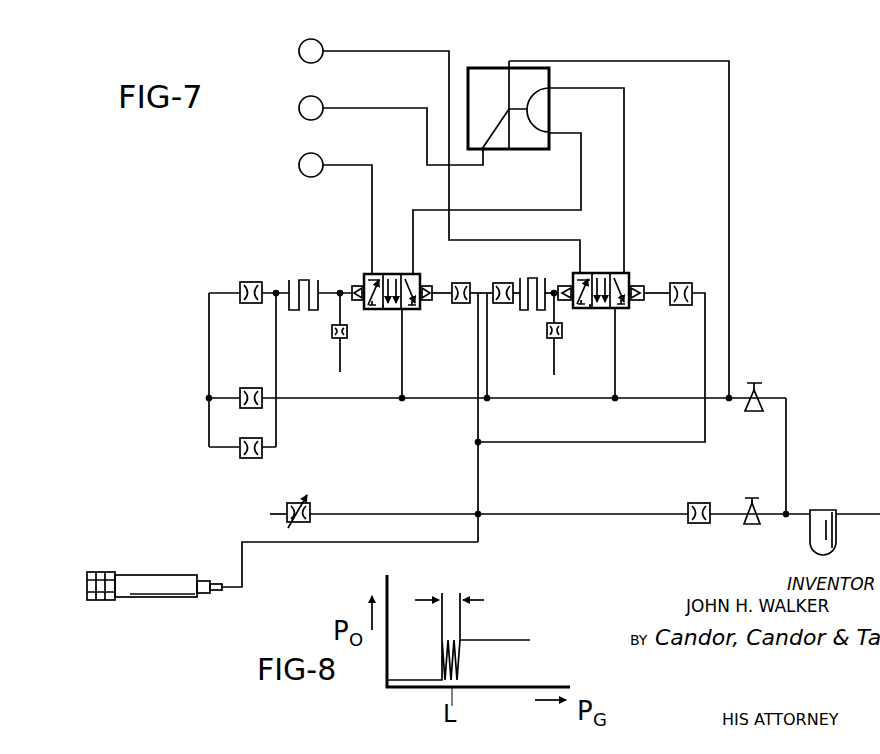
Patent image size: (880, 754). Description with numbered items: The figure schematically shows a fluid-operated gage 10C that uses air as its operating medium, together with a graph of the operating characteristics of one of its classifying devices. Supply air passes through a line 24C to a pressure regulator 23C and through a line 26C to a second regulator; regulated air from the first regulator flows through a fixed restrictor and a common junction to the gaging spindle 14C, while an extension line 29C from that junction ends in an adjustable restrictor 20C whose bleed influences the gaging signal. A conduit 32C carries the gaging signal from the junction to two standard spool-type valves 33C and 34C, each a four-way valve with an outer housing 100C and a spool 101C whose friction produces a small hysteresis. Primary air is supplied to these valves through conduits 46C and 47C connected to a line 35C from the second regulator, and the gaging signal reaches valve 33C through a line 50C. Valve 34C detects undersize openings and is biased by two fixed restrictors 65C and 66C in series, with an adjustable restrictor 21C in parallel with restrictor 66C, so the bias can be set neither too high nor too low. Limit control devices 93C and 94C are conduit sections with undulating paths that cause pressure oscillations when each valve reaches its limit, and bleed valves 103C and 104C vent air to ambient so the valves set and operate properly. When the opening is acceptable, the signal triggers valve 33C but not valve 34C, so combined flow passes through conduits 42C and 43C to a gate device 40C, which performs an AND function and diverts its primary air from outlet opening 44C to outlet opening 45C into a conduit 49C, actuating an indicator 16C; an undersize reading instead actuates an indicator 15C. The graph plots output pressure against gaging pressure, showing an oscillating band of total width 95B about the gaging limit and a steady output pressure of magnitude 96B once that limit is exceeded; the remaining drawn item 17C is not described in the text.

In FIG. 7, the gage 10C is at (795, 75).
In FIG. 7, the gaging spindle 14C is at (122, 572).
In FIG. 7, the indicator 15C is at (299, 168).
In FIG. 7, the indicator 16C is at (299, 108).
In FIG. 7, the pressure supply source 17C is at (299, 51).
In FIG. 7, the adjustable restrictor 20C is at (283, 500).
In FIG. 7, the adjustable restrictor 21C is at (234, 456).
In FIG. 7, the pressure regulator 23C is at (758, 524).
In FIG. 7, the line 24C is at (778, 517).
In FIG. 7, the line 26C is at (788, 440).
In FIG. 7, the extension line 29C is at (329, 513).
In FIG. 7, the conduit 32C is at (478, 470).
In FIG. 7, the spool-type valve 33C is at (633, 271).
In FIG. 7, the spool-type valve 34C is at (369, 271).
In FIG. 7, the line 35C is at (740, 380).
In FIG. 7, the gate device 40C is at (484, 68).
In FIG. 7, the conduit 42C is at (625, 137).
In FIG. 7, the conduit 43C is at (581, 168).
In FIG. 7, the outlet opening 44C is at (509, 150).
In FIG. 7, the outlet opening 45C is at (483, 150).
In FIG. 7, the conduit 46C is at (616, 399).
In FIG. 7, the conduit 47C is at (404, 380).
In FIG. 7, the conduit 49C is at (363, 107).
In FIG. 7, the line 50C is at (705, 436).
In FIG. 7, the fixed restrictor 65C is at (240, 396).
In FIG. 7, the fixed restrictor 66C is at (240, 290).
In FIG. 7, the limit control device 93C is at (545, 262).
In FIG. 7, the limit control device 94C is at (300, 280).
In FIG. 7, the outer housing 100C is at (415, 273).
In FIG. 7, the spool 101C is at (383, 310).
In FIG. 7, the bleed valve 103C is at (548, 334).
In FIG. 7, the bleed valve 104C is at (333, 336).
In FIG. 8, the band 95B is at (453, 592).
In FIG. 8, the steady output pressure magnitude 96B is at (515, 629).